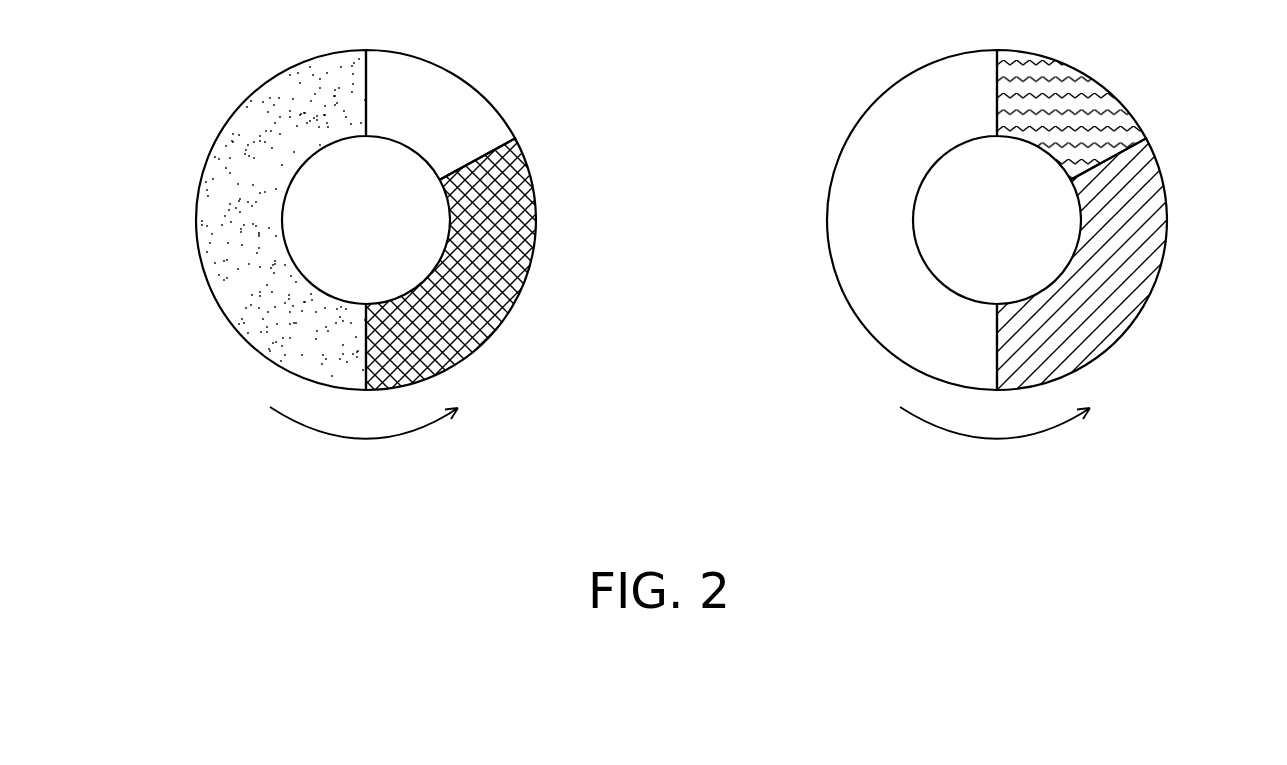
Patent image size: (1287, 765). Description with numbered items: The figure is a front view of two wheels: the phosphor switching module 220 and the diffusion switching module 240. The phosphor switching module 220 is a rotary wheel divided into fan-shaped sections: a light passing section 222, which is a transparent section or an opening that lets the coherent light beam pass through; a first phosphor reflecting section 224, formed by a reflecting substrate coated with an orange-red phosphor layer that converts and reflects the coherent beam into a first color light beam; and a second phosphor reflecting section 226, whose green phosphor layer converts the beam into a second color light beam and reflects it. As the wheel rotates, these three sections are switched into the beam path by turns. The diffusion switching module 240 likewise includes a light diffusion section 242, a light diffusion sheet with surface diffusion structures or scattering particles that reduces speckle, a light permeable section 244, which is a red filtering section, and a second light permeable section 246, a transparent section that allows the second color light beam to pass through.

The phosphor switching module 220 is at (377, 254).
The light passing section 222 is at (437, 87).
The first phosphor reflecting section 224 is at (497, 265).
The second phosphor reflecting section 226 is at (262, 293).
The diffusion switching module 240 is at (1010, 253).
The light diffusion section 242 is at (1067, 87).
The light permeable section 244 is at (1137, 263).
The second light permeable section 246 is at (865, 267).